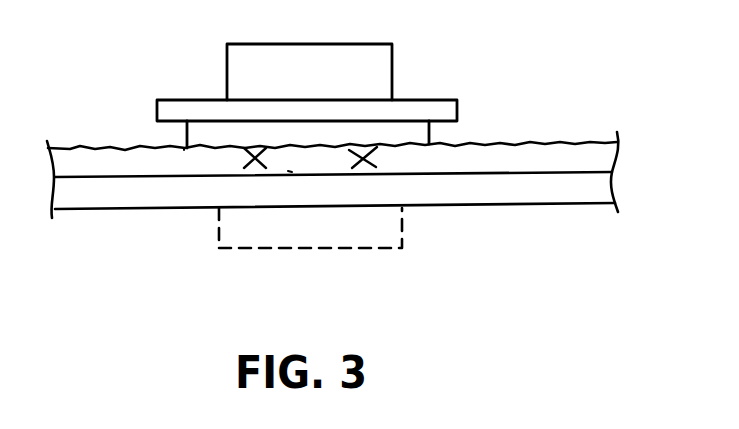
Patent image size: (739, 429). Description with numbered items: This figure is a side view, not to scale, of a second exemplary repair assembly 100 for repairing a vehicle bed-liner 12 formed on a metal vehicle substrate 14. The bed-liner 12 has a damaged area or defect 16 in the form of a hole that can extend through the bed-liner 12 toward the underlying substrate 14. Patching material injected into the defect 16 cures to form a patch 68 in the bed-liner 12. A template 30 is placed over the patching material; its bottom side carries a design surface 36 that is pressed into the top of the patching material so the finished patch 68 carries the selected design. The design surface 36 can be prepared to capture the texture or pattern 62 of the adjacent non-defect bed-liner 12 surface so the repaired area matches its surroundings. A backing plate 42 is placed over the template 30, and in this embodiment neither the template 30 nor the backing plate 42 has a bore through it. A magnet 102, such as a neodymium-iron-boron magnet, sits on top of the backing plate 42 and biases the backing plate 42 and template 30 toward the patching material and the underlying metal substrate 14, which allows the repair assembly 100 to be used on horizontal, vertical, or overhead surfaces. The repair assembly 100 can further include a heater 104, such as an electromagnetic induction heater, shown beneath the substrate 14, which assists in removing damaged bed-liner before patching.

The repair assembly 100 is at (140, 73).
The magnet 102 is at (392, 58).
The backing plate 42 is at (157, 110).
The bed-liner 12 is at (590, 153).
The pattern 62 is at (517, 143).
The substrate 14 is at (540, 193).
The template 30 is at (195, 135).
The design surface 36 is at (268, 151).
The defect 16 is at (370, 166).
The patch 68 is at (290, 169).
The heater 104 is at (355, 248).